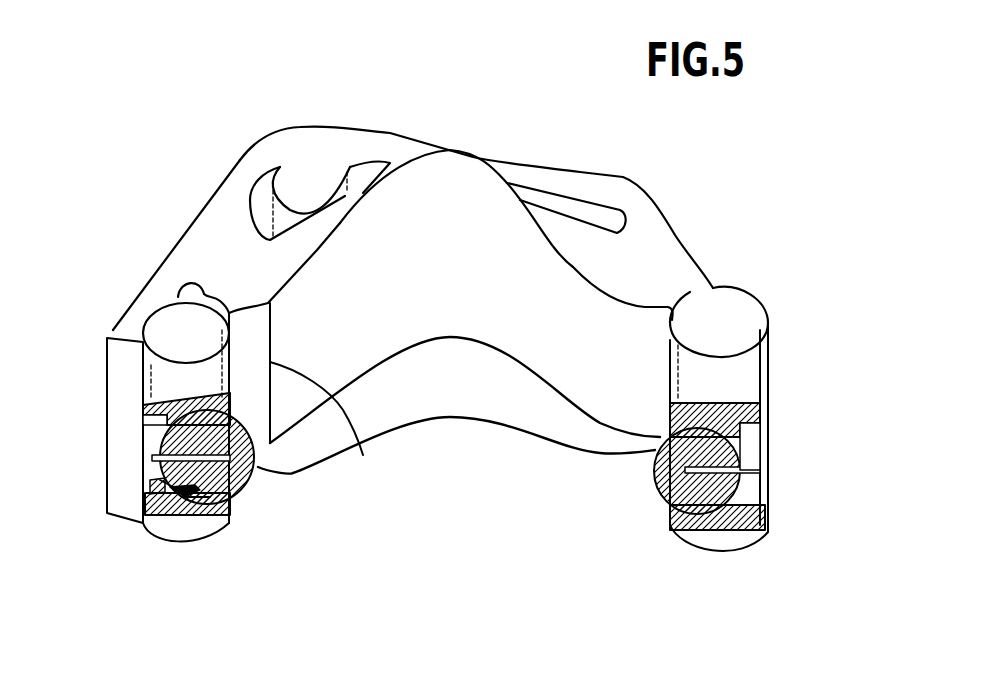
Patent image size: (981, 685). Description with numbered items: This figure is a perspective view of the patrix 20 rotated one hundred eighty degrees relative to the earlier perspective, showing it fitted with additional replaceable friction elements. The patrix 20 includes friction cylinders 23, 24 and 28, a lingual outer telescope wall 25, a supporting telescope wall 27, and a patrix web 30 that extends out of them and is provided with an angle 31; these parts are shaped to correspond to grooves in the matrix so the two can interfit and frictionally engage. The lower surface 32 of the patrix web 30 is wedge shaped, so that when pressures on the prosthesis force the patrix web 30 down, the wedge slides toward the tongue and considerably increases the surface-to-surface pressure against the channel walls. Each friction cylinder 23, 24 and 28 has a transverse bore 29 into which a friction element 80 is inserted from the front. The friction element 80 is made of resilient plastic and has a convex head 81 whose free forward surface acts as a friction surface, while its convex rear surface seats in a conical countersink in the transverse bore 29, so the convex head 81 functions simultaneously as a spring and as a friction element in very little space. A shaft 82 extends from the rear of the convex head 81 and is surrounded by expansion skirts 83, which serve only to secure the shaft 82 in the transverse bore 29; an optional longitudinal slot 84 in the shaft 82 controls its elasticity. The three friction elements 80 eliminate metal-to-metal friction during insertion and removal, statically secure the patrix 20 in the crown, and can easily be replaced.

The patrix 20 is at (762, 203).
The friction cylinder 23 is at (175, 340).
The friction cylinder 24 is at (720, 327).
The lingual outer telescope wall 25 is at (555, 178).
The supporting telescope wall 27 is at (197, 243).
The friction cylinder 28 is at (313, 180).
The transverse bore 29 is at (147, 428).
The patrix web 30 is at (450, 205).
The angle 31 is at (363, 455).
The lower surface 32 is at (490, 387).
The friction element 80 is at (262, 503).
The convex head 81 is at (235, 500).
The shaft 82 is at (178, 503).
The expansion skirts 83 is at (160, 487).
The longitudinal slot 84 is at (152, 462).